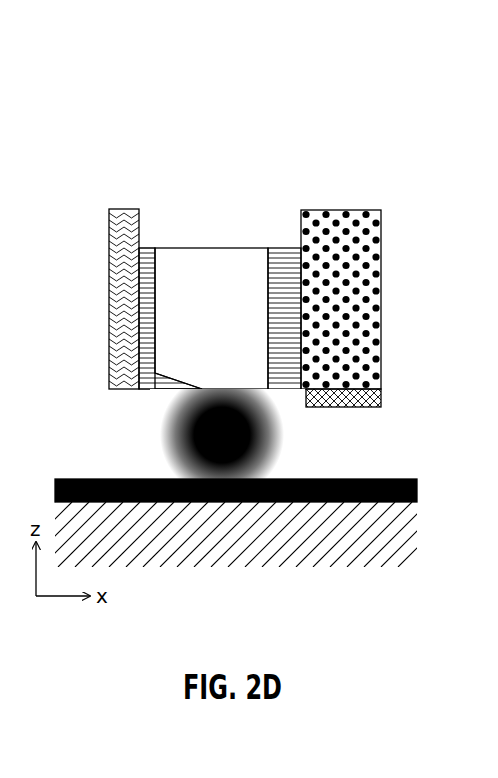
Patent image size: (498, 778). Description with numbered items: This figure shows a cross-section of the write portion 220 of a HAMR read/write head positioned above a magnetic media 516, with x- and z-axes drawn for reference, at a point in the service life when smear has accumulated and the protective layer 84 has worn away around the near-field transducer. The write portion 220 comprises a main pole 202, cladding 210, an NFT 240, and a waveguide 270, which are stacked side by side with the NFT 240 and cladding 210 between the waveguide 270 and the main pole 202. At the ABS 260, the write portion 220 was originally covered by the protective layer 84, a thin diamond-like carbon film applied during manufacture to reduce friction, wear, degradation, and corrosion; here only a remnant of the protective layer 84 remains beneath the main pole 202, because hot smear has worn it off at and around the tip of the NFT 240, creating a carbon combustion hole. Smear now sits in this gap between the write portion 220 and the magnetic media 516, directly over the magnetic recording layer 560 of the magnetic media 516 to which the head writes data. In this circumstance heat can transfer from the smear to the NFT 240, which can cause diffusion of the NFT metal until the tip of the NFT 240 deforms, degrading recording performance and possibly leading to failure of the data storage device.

The write portion 220 is at (222, 74).
The waveguide 270 is at (131, 209).
The NFT 240 is at (188, 248).
The cladding 210 is at (283, 248).
The main pole 202 is at (360, 210).
The protective layer 84 is at (333, 407).
The ABS 260 is at (137, 414).
The magnetic recording layer 560 is at (389, 476).
The magnetic media 516 is at (285, 578).